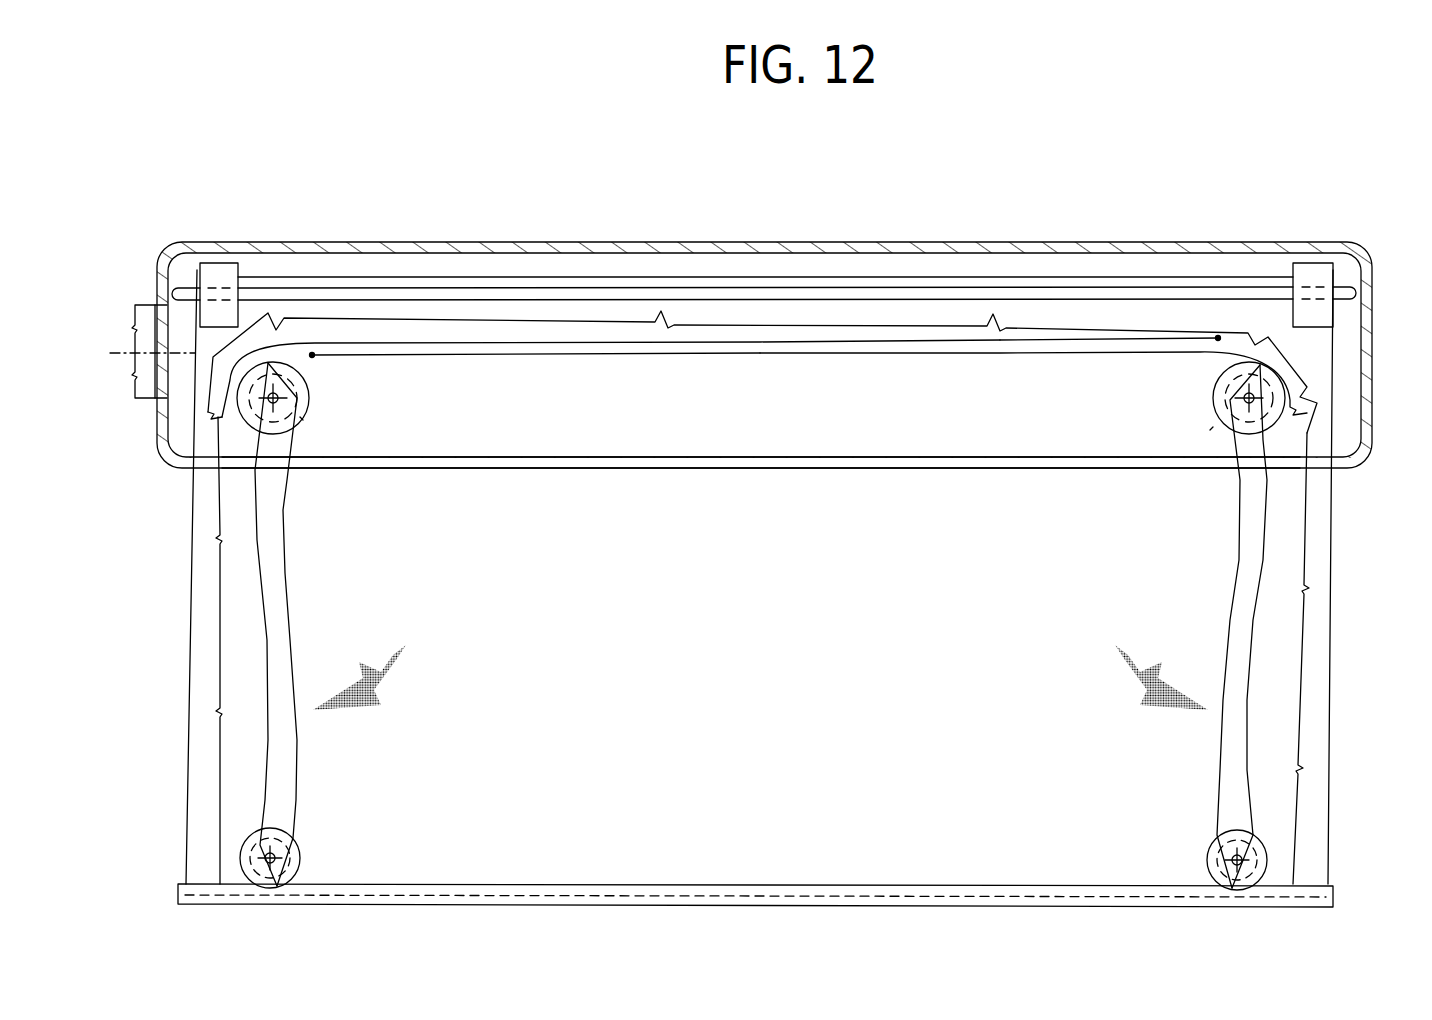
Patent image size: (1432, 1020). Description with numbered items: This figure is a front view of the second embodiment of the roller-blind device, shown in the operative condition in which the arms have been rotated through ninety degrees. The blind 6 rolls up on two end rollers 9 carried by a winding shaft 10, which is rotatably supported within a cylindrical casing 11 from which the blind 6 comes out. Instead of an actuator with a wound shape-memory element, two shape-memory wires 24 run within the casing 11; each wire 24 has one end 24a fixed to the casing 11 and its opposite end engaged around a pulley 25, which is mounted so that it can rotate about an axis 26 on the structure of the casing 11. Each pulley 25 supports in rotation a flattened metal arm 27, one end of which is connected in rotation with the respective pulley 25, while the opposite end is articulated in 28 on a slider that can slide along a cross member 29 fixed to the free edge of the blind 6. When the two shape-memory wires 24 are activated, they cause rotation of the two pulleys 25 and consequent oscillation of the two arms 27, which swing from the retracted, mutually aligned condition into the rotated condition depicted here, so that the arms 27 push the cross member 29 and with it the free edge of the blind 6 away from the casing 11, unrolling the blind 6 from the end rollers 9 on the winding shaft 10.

The blind 6 is at (1317, 630).
The end rollers 9 is at (240, 266).
The winding shaft 10 is at (468, 295).
The cylindrical casing 11 is at (623, 242).
The shape-memory wires 24 is at (603, 343).
The end of wire 24a is at (368, 362).
The pulley 25 is at (309, 393).
The axis 26 is at (300, 417).
The flattened metal arm 27 is at (273, 597).
The articulation 28 is at (298, 835).
The cross member 29 is at (850, 888).